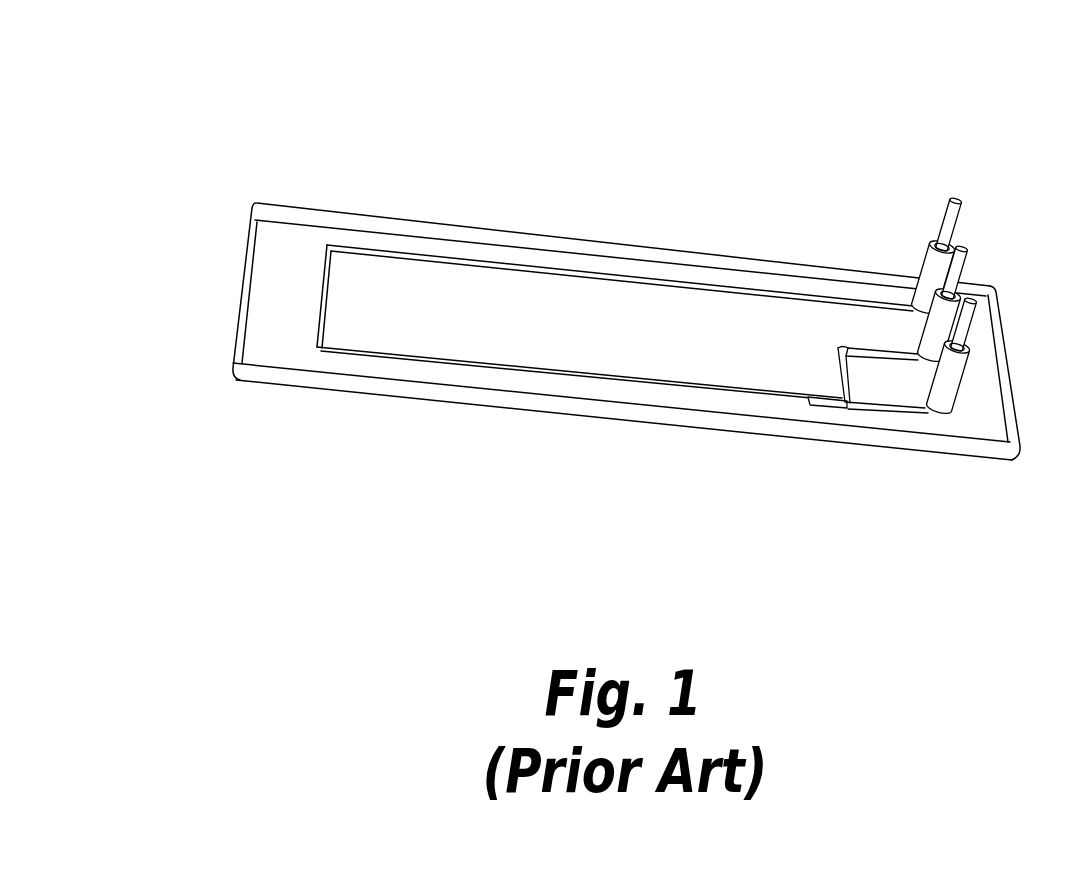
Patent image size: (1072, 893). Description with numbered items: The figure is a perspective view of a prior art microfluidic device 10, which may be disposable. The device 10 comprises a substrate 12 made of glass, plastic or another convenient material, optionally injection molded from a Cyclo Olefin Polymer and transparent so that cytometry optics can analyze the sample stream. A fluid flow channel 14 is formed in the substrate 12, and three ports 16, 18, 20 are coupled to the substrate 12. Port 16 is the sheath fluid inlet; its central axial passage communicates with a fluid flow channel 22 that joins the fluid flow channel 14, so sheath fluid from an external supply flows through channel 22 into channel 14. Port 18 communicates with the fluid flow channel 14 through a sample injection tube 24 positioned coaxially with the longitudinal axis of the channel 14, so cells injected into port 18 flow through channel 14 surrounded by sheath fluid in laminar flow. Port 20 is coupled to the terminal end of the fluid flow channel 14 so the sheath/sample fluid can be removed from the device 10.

The microfluidic device 10 is at (778, 94).
The substrate 12 is at (255, 332).
The fluid flow channel 14 is at (433, 258).
The port 16 is at (968, 278).
The port 18 is at (970, 343).
The port 20 is at (967, 210).
The fluid flow channel 22 is at (858, 348).
The sample injection tube 24 is at (816, 406).